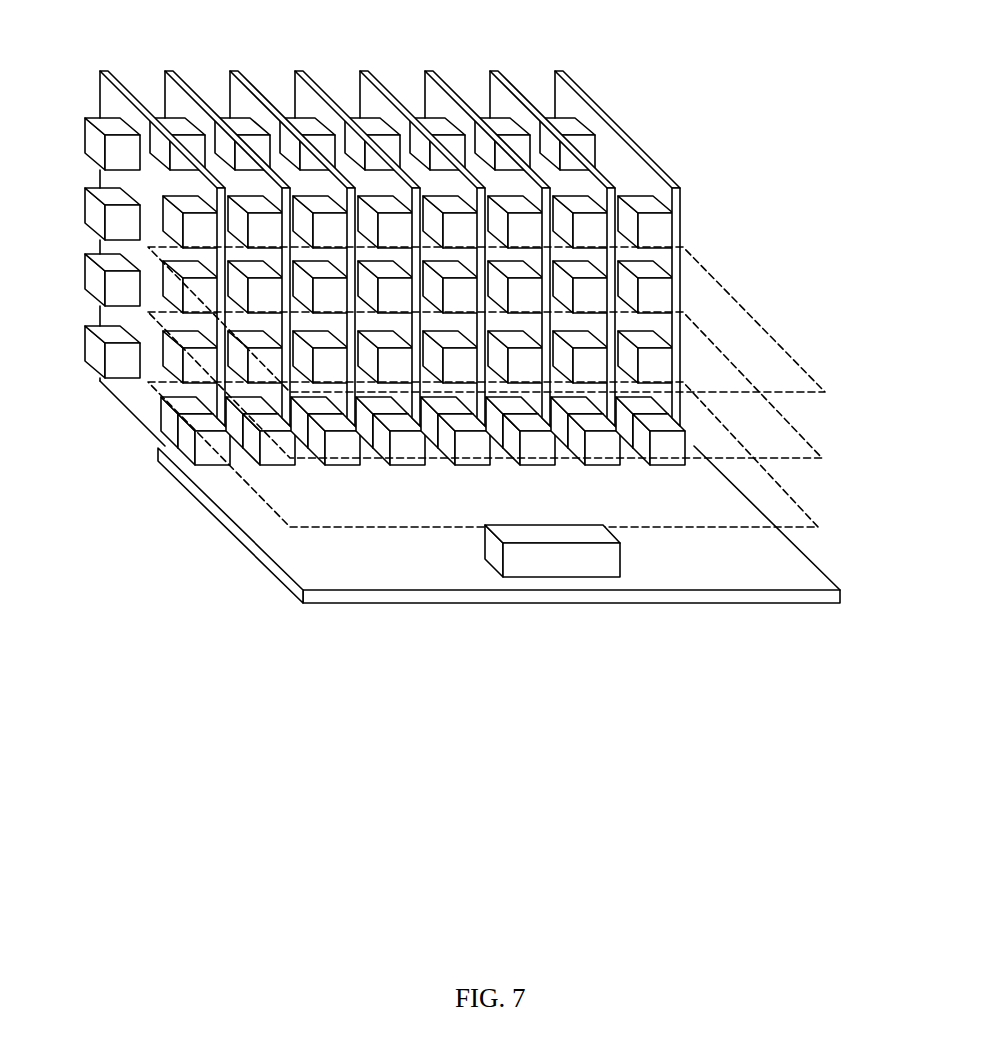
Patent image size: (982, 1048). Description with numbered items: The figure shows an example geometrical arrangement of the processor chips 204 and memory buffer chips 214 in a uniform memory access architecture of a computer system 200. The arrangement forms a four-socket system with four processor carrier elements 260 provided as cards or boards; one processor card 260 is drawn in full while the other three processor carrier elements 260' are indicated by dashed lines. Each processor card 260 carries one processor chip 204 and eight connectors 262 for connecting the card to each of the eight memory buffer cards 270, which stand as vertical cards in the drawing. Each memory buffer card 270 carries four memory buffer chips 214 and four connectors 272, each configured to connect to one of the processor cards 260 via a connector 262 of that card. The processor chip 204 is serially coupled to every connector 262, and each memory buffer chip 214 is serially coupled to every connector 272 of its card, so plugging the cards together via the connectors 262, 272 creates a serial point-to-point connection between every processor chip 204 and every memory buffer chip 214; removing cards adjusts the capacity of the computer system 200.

The computer system 200 is at (737, 140).
The processor chip 204 is at (503, 577).
The memory buffer chip 214 is at (103, 383).
The processor carrier element 260 is at (494, 524).
The other processor carrier elements 260' is at (516, 387).
The connector 262 is at (178, 473).
The memory buffer card 270 is at (105, 73).
The connector 272 is at (162, 438).